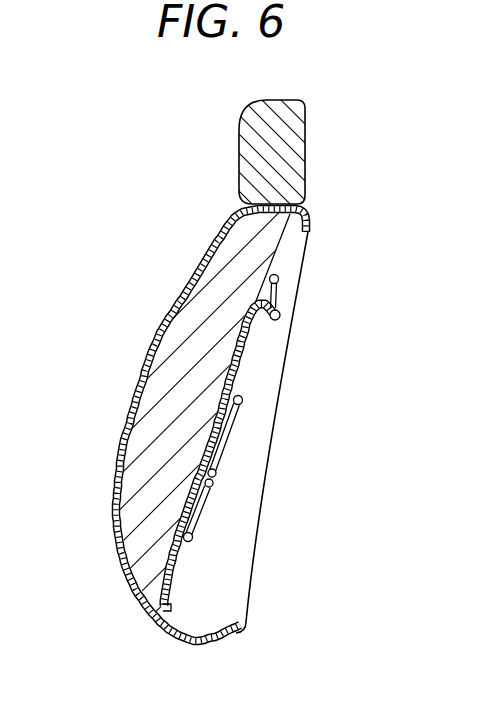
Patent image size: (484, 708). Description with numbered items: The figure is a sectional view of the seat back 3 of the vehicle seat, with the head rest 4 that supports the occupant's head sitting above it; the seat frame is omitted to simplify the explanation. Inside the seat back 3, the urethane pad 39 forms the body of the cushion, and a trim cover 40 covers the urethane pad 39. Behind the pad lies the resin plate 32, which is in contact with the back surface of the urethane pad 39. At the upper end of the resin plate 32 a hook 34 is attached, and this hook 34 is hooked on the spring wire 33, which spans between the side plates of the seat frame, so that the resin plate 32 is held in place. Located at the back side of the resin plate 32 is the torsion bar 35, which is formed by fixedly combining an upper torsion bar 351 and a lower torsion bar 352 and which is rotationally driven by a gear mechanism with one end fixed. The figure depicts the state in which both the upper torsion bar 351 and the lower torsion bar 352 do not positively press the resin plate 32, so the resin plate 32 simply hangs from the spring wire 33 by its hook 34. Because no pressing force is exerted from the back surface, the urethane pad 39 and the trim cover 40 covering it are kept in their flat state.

The seat back 3 is at (242, 425).
The head rest 4 is at (306, 141).
The resin plate 32 is at (246, 368).
The spring wire 33 is at (279, 291).
The hook 34 is at (284, 307).
The torsion bar 35 is at (287, 469).
The upper torsion bar 351 is at (226, 442).
The lower torsion bar 352 is at (257, 510).
The urethane pad 39 is at (160, 417).
The trim cover 40 is at (112, 500).